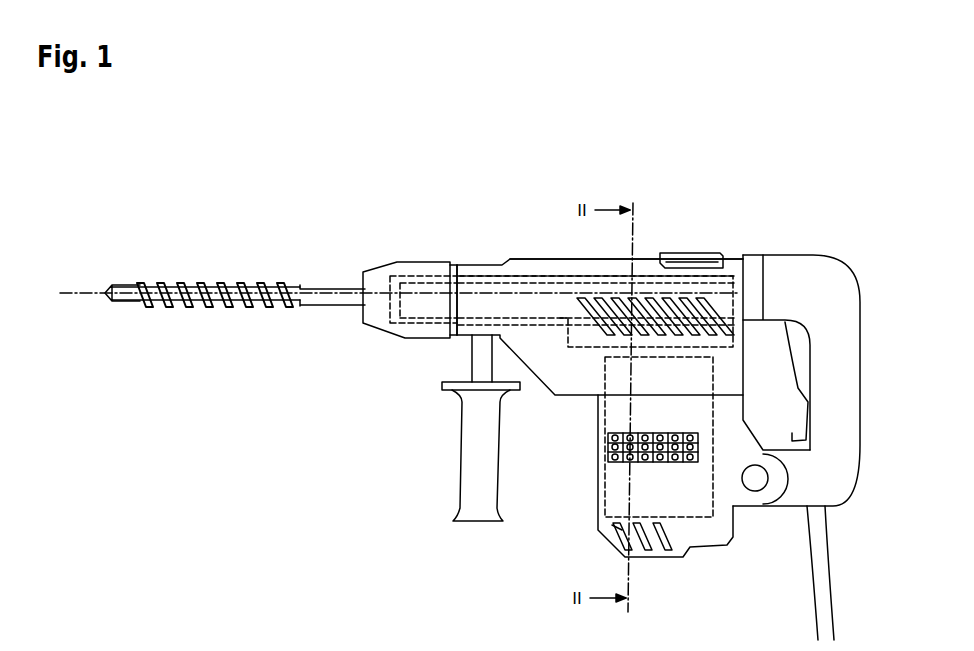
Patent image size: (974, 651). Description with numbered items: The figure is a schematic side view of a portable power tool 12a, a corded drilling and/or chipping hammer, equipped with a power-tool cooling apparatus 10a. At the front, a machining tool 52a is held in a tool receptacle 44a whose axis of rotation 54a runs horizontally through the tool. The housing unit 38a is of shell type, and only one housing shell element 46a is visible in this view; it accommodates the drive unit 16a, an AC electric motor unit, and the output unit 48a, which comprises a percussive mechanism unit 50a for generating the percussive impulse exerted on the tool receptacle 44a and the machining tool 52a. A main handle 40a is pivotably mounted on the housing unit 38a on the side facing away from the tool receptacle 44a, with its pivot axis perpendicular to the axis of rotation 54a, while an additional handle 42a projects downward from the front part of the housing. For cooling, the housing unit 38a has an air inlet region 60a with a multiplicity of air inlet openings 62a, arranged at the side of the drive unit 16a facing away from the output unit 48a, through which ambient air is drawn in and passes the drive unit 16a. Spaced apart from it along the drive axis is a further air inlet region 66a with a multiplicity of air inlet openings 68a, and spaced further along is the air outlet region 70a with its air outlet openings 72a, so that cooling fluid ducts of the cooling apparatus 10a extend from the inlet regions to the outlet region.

The power-tool cooling apparatus 10a is at (521, 586).
The portable power tool 12a is at (267, 190).
The drive unit 16a is at (707, 537).
The housing unit 38a is at (538, 250).
The main handle 40a is at (838, 376).
The additional handle 42a is at (475, 465).
The tool receptacle 44a is at (398, 263).
The housing shell element 46a is at (568, 268).
The output unit 48a is at (697, 252).
The percussive mechanism unit 50a is at (480, 283).
The machining tool 52a is at (133, 303).
The axis of rotation 54a is at (88, 290).
The air inlet region 60a is at (607, 527).
The air inlet opening 62a is at (622, 530).
The air inlet region 66a is at (597, 445).
The air inlet opening 68a is at (612, 461).
The air outlet region 70a is at (716, 303).
The air outlet opening 72a is at (727, 311).